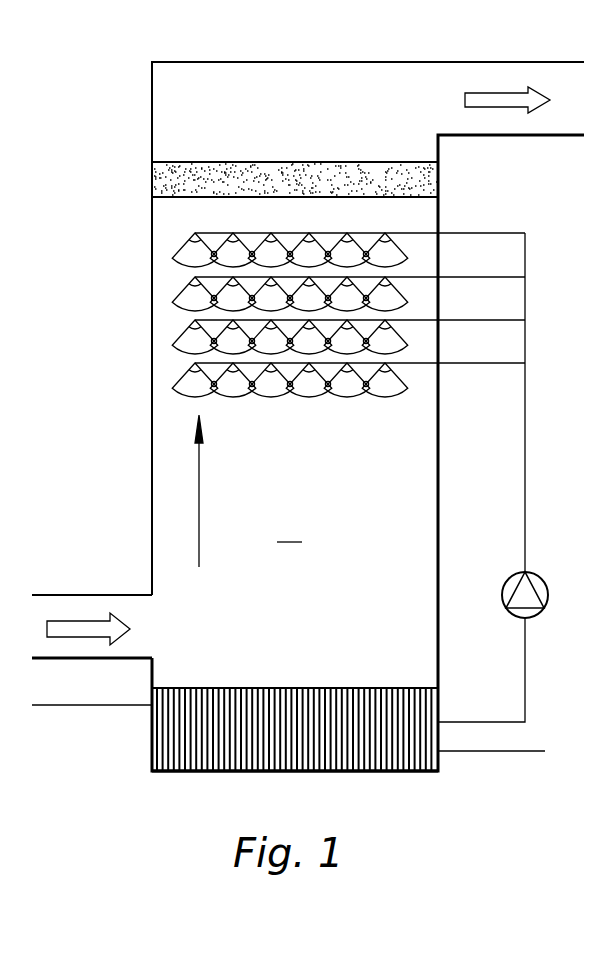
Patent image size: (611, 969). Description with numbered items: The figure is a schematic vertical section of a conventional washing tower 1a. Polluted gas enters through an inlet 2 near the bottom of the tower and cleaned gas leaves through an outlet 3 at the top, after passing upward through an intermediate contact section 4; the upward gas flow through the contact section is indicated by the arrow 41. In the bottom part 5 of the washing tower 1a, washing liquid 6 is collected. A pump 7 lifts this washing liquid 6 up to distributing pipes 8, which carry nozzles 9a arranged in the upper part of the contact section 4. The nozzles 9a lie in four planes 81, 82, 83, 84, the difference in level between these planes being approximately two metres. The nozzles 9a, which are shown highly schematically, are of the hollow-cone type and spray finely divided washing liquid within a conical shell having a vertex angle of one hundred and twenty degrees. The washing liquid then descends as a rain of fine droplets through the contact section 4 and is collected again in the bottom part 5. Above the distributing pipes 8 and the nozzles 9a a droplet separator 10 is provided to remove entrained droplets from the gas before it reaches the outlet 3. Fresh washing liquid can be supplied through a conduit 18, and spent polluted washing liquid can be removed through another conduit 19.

The washing tower 1a is at (150, 310).
The inlet 2 is at (92, 595).
The outlet 3 is at (472, 62).
The contact section 4 is at (289, 531).
The gas flow direction 41 is at (200, 495).
The bottom part 5 is at (183, 772).
The washing liquid 6 is at (293, 754).
The pump 7 is at (548, 585).
The distributing pipes 8 is at (516, 233).
The plane with nozzles 81 is at (490, 364).
The plane with nozzles 82 is at (490, 321).
The plane with nozzles 83 is at (490, 278).
The plane with nozzles 84 is at (490, 234).
The nozzles 9a is at (312, 233).
The droplet separator 10 is at (395, 168).
The conduit 18 is at (85, 705).
The conduit 19 is at (497, 751).